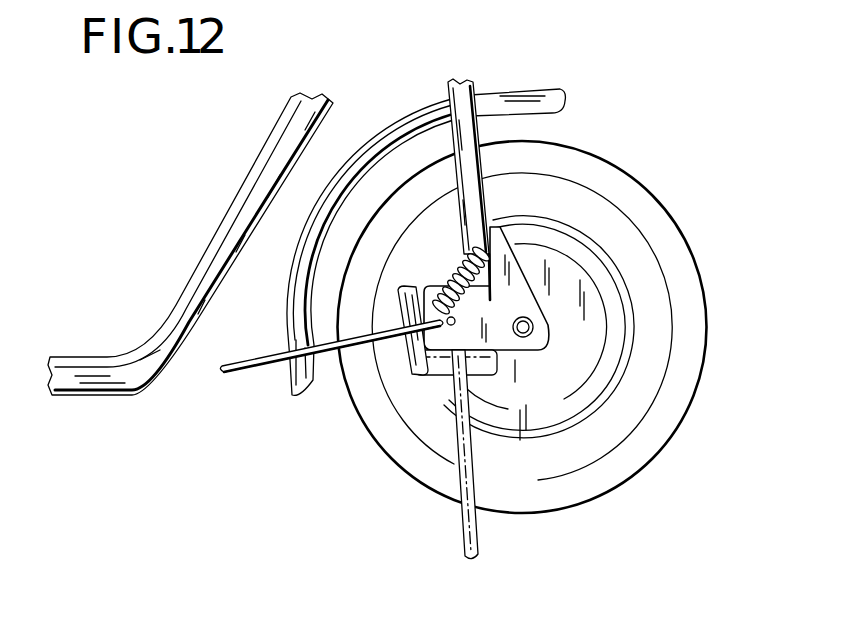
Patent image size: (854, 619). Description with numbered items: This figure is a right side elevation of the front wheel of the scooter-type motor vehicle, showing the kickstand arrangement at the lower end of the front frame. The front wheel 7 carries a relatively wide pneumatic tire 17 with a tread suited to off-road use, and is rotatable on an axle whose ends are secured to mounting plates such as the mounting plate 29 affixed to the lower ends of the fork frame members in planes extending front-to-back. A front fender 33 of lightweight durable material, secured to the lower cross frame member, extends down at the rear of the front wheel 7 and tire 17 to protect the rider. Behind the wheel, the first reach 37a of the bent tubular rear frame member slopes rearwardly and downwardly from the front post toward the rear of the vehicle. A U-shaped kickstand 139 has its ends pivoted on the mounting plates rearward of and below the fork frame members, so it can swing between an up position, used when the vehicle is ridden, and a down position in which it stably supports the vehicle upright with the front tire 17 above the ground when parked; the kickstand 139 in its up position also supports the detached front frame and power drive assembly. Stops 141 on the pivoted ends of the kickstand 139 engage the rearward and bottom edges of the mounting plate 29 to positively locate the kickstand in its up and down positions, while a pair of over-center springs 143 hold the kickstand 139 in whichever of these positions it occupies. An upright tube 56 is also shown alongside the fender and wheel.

The front wheel 7 is at (607, 356).
The pneumatic tire 17 is at (675, 433).
The mounting plate 29 is at (517, 297).
The front fender 33 is at (565, 103).
The first reach 37a is at (243, 180).
The fork tube 56 is at (475, 85).
The kickstand 139 is at (250, 371).
The stops 141 is at (398, 296).
The over-center springs 143 is at (461, 278).